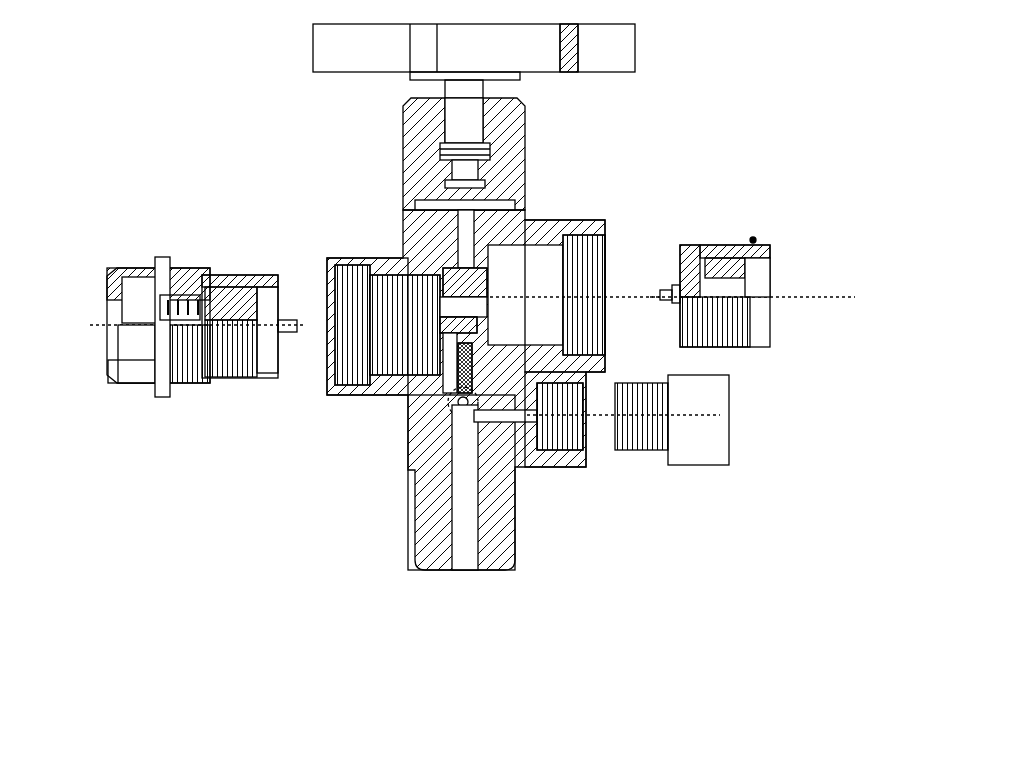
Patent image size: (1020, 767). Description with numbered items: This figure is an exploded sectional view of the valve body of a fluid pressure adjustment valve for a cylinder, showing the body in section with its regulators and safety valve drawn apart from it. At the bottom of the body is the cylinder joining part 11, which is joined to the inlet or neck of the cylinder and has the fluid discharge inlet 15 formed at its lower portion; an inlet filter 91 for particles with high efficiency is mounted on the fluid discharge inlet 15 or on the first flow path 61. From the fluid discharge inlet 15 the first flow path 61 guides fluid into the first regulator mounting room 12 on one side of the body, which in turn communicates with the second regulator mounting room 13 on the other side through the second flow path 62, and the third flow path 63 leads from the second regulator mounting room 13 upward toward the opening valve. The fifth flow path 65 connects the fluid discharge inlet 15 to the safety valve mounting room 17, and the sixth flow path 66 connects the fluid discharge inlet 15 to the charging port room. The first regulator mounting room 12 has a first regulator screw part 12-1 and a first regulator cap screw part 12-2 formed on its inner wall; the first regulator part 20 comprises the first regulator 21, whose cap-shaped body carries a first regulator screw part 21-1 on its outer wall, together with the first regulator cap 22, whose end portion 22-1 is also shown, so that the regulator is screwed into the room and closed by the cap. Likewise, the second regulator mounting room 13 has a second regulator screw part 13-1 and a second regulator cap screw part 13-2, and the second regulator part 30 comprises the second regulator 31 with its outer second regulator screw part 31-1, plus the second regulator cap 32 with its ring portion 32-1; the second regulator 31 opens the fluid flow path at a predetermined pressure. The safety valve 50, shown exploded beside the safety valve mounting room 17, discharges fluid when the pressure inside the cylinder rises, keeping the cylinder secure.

The cylinder joining part 11 is at (413, 555).
The first regulator mounting room 12 is at (247, 543).
The first regulator screw part 12-1 is at (395, 390).
The first regulator cap screw part 12-2 is at (328, 382).
The second regulator mounting room 13 is at (710, 122).
The second regulator screw part 13-1 is at (575, 222).
The second regulator cap screw part 13-2 is at (605, 235).
The fluid discharge inlet 15 is at (467, 528).
The safety valve mounting room 17 is at (530, 465).
The first regulator part 20 is at (164, 320).
The first regulator 21 is at (245, 275).
The first regulator screw part 21-1 is at (230, 387).
The first regulator cap 22 is at (112, 276).
The cap end portion 22-1 is at (185, 385).
The second regulator part 30 is at (677, 422).
The second regulator 31 is at (727, 245).
The second regulator screw part 31-1 is at (677, 422).
The second regulator cap 32 is at (820, 242).
The flange ring 32-1 is at (783, 358).
The safety valve 50 is at (698, 442).
The first flow path 61 is at (443, 320).
The second flow path 62 is at (463, 293).
The third flow path 63 is at (462, 233).
The fifth flow path 65 is at (515, 478).
The sixth flow path 66 is at (540, 425).
The inlet filter 91 is at (450, 390).